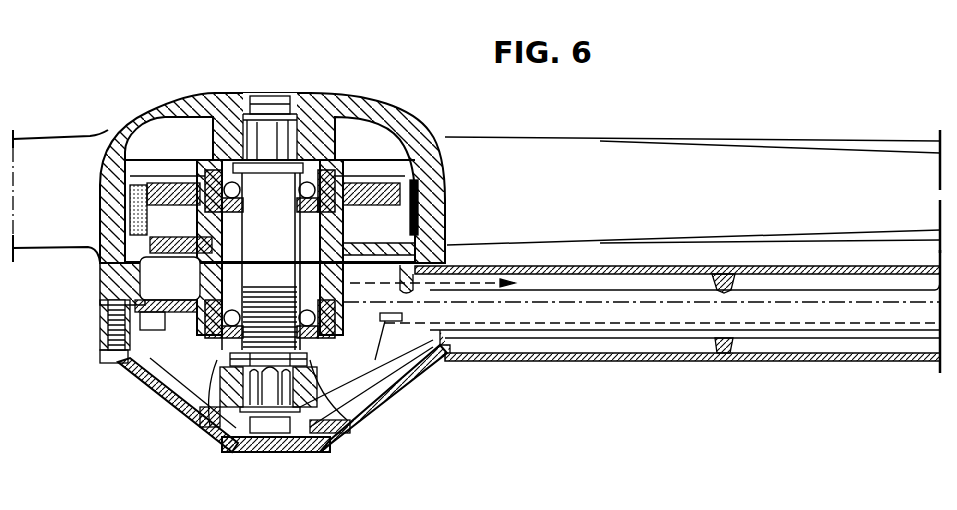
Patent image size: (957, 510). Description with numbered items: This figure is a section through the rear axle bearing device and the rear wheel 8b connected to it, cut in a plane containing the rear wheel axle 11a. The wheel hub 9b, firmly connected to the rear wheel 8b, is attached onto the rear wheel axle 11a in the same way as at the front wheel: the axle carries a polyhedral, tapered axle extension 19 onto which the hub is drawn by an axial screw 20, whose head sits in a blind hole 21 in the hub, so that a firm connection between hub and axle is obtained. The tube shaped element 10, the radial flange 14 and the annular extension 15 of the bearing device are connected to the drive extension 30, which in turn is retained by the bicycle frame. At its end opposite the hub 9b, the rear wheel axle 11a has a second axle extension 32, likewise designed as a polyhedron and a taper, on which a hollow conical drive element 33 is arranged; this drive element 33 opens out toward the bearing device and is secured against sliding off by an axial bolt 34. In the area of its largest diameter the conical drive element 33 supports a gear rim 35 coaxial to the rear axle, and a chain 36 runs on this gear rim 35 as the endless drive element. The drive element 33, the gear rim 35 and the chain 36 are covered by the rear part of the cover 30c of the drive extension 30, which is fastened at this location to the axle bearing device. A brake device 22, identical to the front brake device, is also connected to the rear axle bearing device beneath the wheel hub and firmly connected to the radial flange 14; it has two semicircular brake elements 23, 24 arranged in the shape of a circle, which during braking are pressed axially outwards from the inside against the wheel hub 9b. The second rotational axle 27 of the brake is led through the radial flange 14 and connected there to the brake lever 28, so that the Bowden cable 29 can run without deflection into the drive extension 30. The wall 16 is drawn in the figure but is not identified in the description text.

The rear wheel 8b is at (693, 153).
The wheel hub 9b is at (393, 120).
The tube shaped element 10 is at (208, 251).
The rear wheel axle 11a is at (225, 430).
The radial flange 14 is at (160, 247).
The annular extension 15 is at (100, 292).
The skirt wall 16 is at (343, 432).
The axle extension 19 is at (247, 140).
The axial screw 20 is at (265, 103).
The blind hole 21 is at (318, 102).
The brake device 22 is at (417, 200).
The brake element 23 is at (377, 198).
The brake element 24 is at (177, 193).
The second rotational axle 27 is at (117, 363).
The lever 28 is at (432, 262).
The Bowden cable 29 is at (470, 263).
The drive extension 30 is at (672, 265).
The cover 30c is at (777, 363).
The second axle extension 32 is at (270, 400).
The drive element 33 is at (382, 407).
The axial bolt 34 is at (280, 427).
The gear rim 35 is at (420, 377).
The chain 36 is at (153, 393).